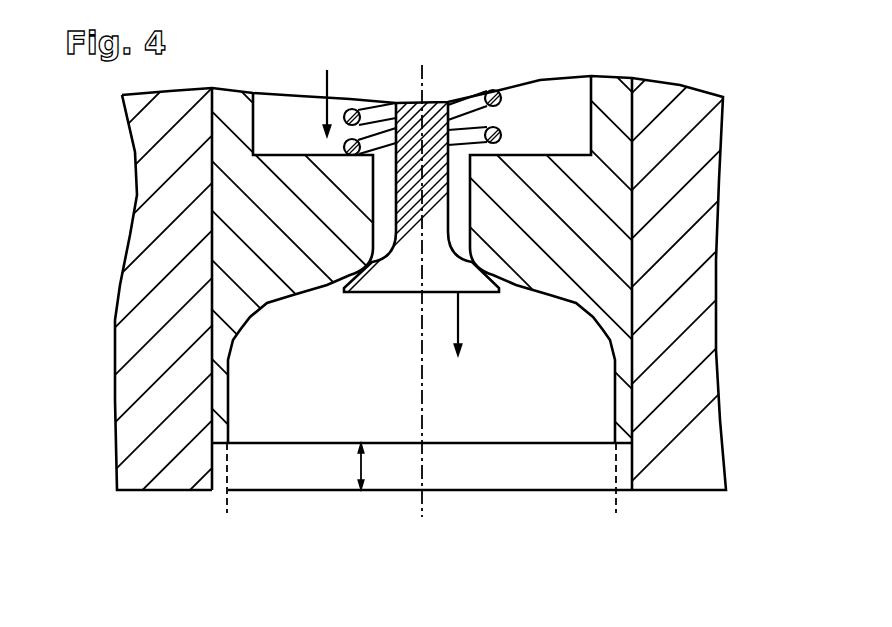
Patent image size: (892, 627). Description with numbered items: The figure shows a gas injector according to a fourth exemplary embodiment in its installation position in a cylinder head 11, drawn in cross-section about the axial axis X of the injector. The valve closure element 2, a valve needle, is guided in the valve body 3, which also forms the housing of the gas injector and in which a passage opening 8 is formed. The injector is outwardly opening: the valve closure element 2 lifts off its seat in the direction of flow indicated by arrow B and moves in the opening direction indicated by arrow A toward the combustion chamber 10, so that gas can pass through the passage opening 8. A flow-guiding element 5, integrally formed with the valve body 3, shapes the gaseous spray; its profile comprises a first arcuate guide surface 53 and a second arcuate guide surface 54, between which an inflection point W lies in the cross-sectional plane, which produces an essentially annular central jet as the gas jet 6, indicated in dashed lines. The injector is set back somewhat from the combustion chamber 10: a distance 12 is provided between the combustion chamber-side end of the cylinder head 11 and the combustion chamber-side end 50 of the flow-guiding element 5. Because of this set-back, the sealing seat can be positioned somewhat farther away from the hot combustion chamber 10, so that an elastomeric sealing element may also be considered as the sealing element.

The valve closure element 2 is at (440, 103).
The valve body 3 is at (243, 217).
The flow-guiding element 5 is at (270, 331).
The gas jet 6 is at (227, 512).
The passage opening 8 is at (452, 212).
The combustion chamber 10 is at (497, 528).
The cylinder head 11 is at (173, 144).
The distance 12 is at (361, 468).
The combustion chamber-side end of flow-guiding element 50 is at (627, 442).
The first arcuate guide surface 53 is at (300, 292).
The second arcuate guide surface 54 is at (230, 403).
The inflection point W is at (320, 296).
The direction of movement for opening A is at (458, 320).
The direction of flow B is at (323, 115).
The axial axis X is at (423, 296).